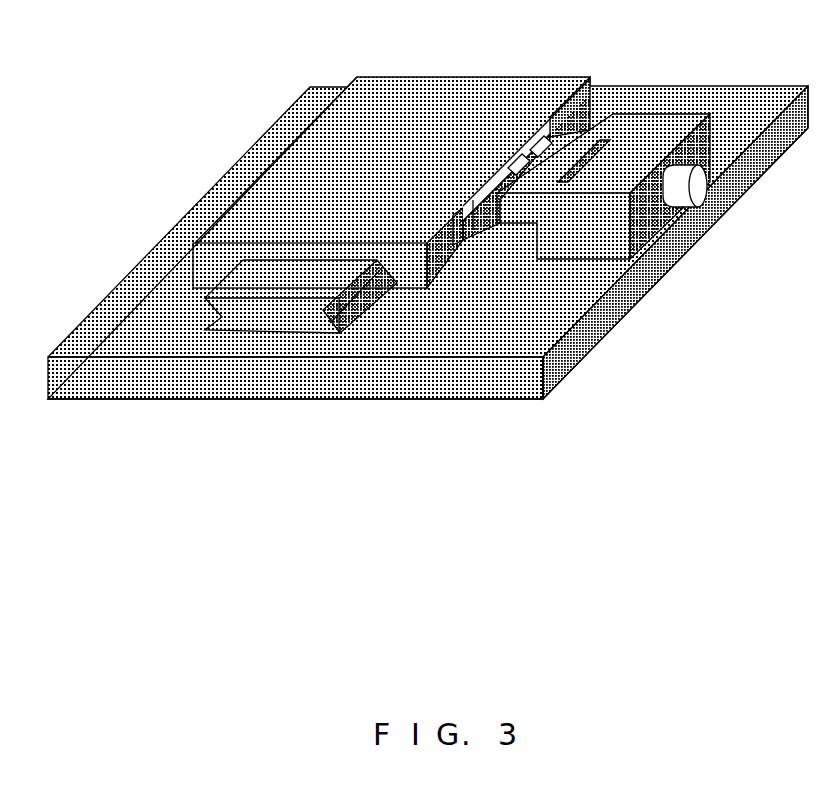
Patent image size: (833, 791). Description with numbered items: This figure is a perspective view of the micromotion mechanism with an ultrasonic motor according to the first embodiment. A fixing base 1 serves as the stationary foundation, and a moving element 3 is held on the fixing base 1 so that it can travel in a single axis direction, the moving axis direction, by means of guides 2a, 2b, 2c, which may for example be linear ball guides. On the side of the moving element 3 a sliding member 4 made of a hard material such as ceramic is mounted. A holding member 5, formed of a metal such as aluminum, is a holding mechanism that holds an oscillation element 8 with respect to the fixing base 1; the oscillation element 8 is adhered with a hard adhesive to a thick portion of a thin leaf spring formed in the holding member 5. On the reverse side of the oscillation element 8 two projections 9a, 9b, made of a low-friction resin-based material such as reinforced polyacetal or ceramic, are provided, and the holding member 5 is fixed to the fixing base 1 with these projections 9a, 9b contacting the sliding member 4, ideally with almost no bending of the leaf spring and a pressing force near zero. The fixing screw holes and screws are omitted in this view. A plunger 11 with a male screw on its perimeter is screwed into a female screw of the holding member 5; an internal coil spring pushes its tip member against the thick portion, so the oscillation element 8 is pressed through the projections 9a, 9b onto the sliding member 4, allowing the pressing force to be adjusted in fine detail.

The fixing base 1 is at (310, 87).
The moving element 3 is at (383, 77).
The guide 2a is at (395, 295).
The guide 2b is at (323, 337).
The guide 2c is at (207, 320).
The sliding member 4 is at (473, 227).
The holding member 5 is at (643, 114).
The oscillation element 8 is at (548, 117).
The projection 9a is at (513, 157).
The projection 9b is at (533, 143).
The plunger 11 is at (707, 198).